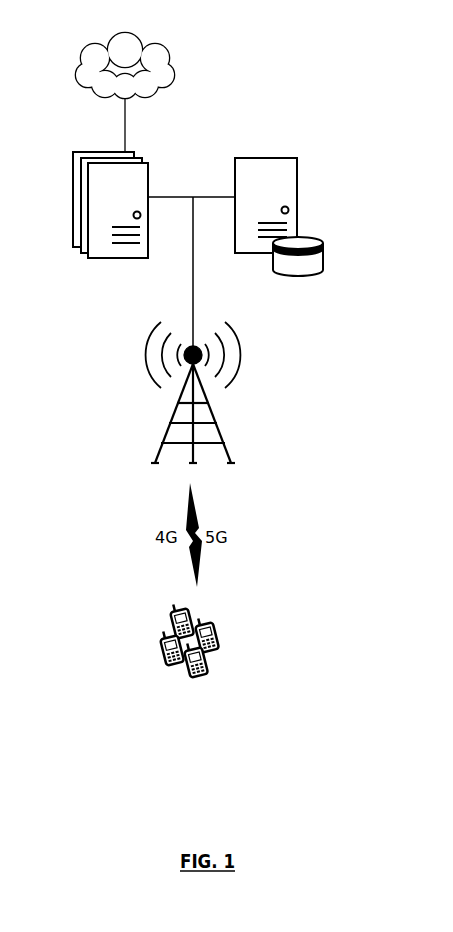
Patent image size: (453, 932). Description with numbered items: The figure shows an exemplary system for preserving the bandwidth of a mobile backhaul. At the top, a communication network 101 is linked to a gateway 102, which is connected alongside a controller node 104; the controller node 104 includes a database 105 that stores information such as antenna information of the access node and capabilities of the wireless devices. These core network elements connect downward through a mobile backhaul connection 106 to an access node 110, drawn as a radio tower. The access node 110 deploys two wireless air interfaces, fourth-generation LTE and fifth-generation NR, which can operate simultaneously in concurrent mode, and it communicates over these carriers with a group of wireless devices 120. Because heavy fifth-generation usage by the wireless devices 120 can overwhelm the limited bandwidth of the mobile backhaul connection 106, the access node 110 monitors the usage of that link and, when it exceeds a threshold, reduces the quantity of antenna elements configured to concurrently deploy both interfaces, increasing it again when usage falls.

The communication network 101 is at (143, 78).
The gateway 102 is at (88, 152).
The controller node 104 is at (295, 157).
The database 105 is at (320, 240).
The mobile backhaul connection 106 is at (193, 296).
The access node 110 is at (175, 418).
The wireless devices 120 is at (247, 625).